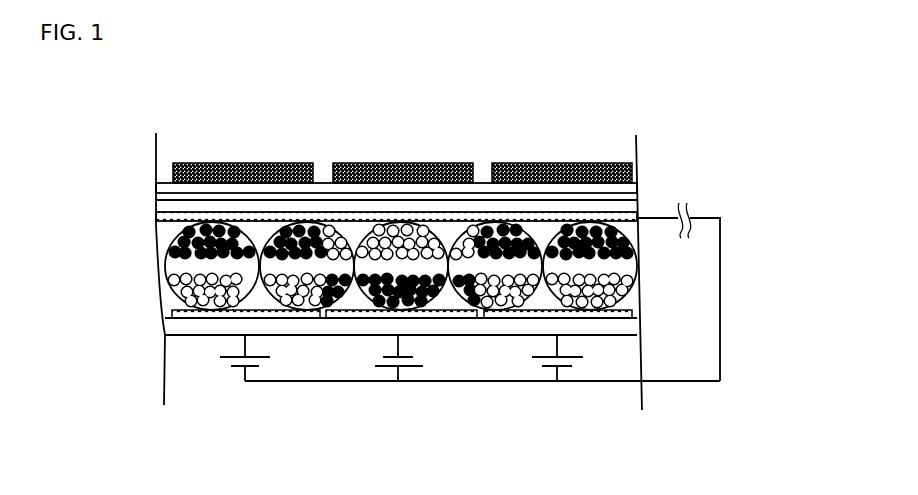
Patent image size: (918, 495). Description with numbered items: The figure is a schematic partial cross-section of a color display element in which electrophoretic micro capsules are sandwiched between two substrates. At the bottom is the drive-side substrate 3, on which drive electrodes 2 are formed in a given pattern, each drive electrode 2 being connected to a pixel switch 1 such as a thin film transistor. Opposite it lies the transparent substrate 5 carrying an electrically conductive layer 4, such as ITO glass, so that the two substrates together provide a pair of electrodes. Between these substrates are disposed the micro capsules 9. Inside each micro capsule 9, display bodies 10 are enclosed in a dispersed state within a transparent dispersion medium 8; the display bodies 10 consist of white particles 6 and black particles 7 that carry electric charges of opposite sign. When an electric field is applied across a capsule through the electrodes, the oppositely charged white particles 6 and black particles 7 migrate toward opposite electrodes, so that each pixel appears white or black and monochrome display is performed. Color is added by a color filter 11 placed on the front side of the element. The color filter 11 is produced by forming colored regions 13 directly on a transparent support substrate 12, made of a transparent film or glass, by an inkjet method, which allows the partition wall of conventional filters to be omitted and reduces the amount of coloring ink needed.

The pixel switch 1 is at (569, 369).
The drive electrode 2 is at (200, 318).
The drive-side substrate 3 is at (185, 328).
The electrically conductive layer 4 is at (163, 216).
The transparent substrate 5 is at (163, 200).
The white particle 6 is at (177, 292).
The black particle 7 is at (170, 248).
The dispersion medium 8 is at (175, 268).
The micro capsule 9 is at (633, 288).
The display body 10 is at (338, 280).
The color filter 11 is at (456, 154).
The transparent support substrate 12 is at (633, 190).
The colored region 13 is at (568, 142).